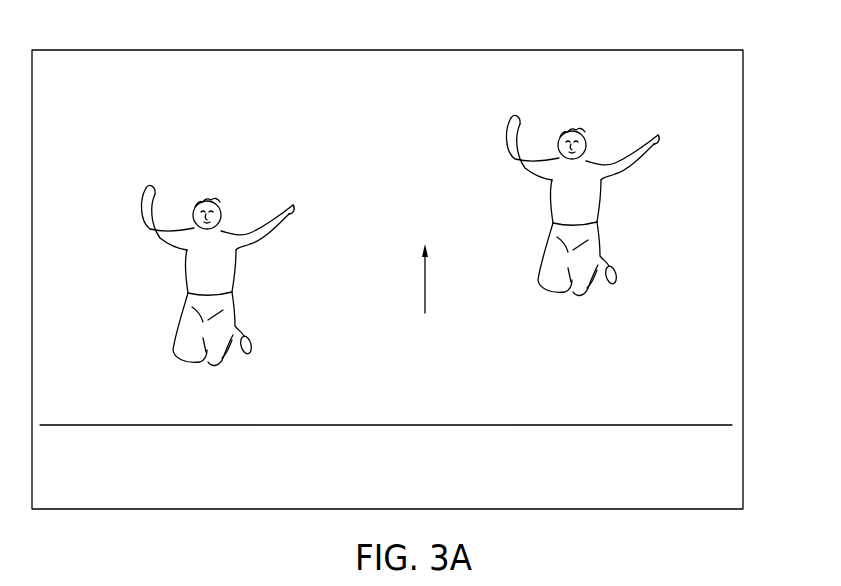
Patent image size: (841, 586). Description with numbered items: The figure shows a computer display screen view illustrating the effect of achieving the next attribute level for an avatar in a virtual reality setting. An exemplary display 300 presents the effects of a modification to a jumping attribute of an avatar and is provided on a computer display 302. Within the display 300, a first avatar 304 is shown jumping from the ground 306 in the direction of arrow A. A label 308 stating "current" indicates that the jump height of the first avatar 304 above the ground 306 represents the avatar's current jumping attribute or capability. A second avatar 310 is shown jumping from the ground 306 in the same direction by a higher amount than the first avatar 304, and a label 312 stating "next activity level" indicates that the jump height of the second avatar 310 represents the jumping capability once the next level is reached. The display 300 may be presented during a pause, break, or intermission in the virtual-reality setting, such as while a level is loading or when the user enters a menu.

The display 300 is at (669, 38).
The computer display 302 is at (455, 50).
The first avatar 304 is at (218, 200).
The ground 306 is at (370, 426).
The label 308 is at (160, 470).
The second avatar 310 is at (583, 133).
The label 312 is at (575, 470).